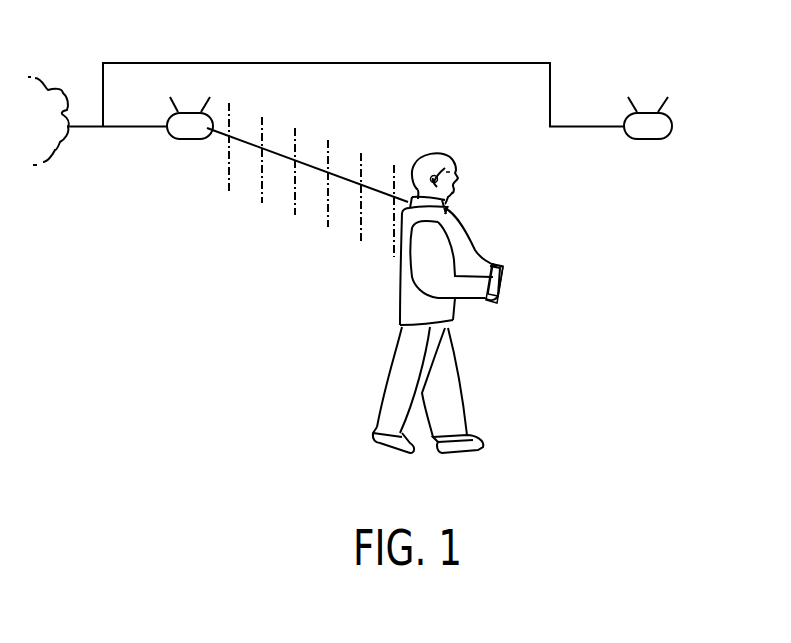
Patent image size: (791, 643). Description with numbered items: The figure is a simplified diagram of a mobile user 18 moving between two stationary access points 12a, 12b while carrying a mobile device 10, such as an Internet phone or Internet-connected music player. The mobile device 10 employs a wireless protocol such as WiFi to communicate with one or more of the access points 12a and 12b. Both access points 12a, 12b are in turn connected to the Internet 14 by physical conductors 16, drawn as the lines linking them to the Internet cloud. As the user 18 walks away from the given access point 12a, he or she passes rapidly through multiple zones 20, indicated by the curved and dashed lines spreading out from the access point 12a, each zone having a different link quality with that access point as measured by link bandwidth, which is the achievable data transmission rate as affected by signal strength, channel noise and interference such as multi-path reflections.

The mobile device 10 is at (503, 273).
The access point 12a is at (187, 140).
The access point 12b is at (648, 140).
The Internet 14 is at (47, 137).
The physical conductors 16 is at (328, 63).
The user 18 is at (400, 288).
The zones 20 is at (278, 135).